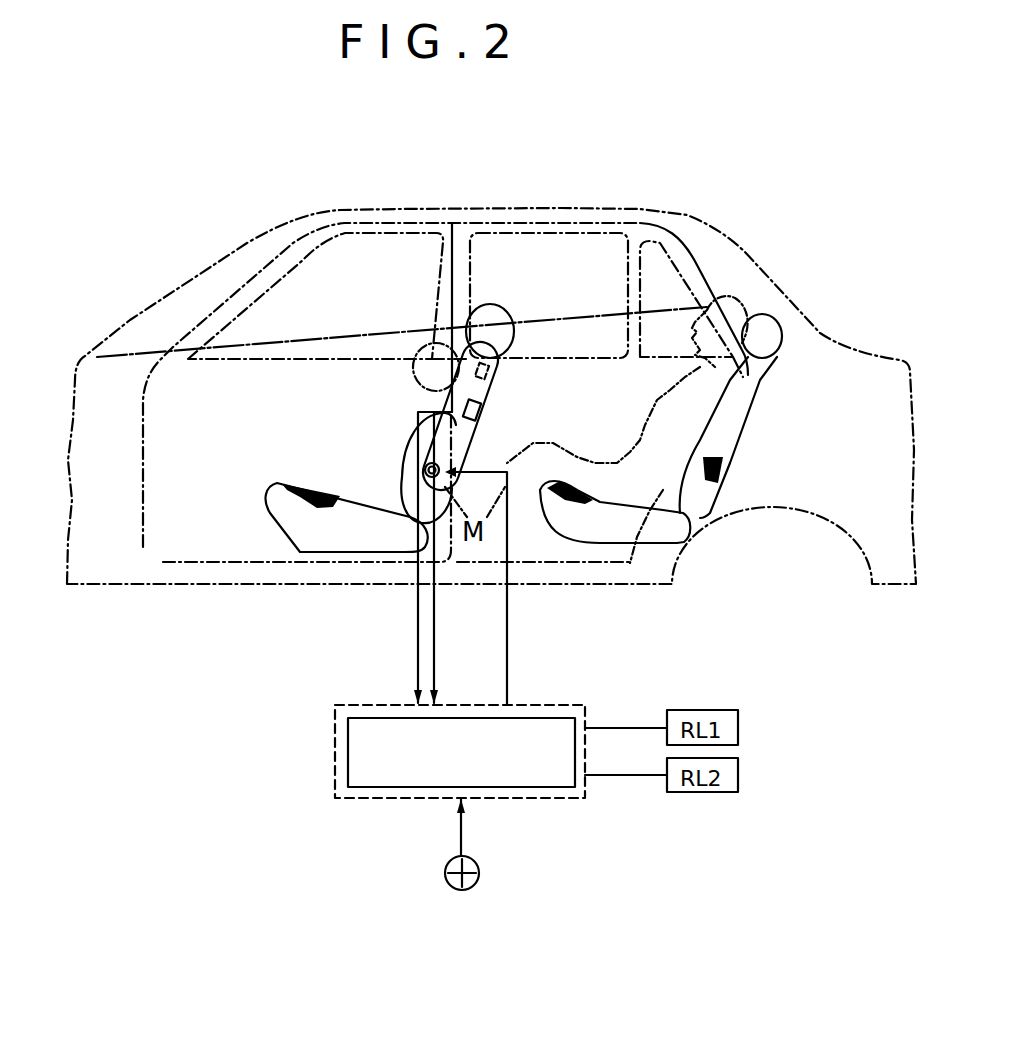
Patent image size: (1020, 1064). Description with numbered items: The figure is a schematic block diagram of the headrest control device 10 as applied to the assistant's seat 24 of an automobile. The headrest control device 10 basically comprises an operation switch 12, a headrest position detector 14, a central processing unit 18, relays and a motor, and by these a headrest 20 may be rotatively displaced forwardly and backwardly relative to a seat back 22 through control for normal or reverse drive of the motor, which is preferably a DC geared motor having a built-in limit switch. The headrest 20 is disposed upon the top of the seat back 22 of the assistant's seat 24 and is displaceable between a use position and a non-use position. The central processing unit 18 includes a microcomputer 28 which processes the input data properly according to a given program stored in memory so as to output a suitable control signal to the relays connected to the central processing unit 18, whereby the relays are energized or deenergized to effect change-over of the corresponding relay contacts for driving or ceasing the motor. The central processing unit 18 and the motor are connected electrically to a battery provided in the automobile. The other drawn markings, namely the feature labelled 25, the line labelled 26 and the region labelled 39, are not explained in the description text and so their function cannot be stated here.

The headrest control device 10 is at (726, 634).
The operation switch 12 is at (495, 398).
The headrest position detector 14 is at (440, 462).
The central processing unit 18 is at (563, 800).
The headrest 20 is at (500, 308).
The seat back 22 is at (410, 460).
The assistant's seat 24 is at (352, 453).
The rear seat 25 is at (737, 460).
The sight line 26 is at (343, 335).
The microcomputer 28 is at (560, 722).
The seat sensor 39 is at (303, 483).